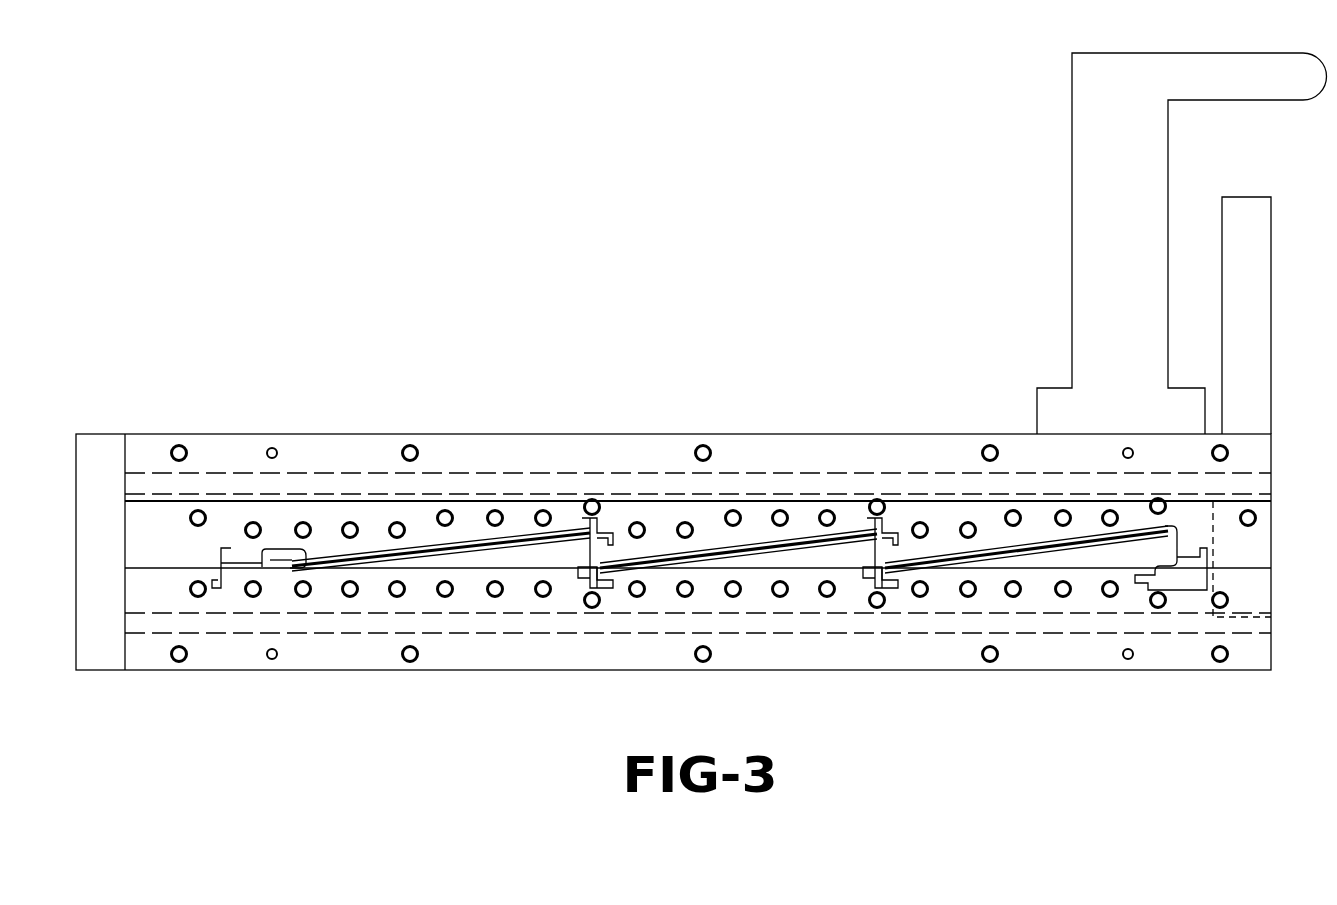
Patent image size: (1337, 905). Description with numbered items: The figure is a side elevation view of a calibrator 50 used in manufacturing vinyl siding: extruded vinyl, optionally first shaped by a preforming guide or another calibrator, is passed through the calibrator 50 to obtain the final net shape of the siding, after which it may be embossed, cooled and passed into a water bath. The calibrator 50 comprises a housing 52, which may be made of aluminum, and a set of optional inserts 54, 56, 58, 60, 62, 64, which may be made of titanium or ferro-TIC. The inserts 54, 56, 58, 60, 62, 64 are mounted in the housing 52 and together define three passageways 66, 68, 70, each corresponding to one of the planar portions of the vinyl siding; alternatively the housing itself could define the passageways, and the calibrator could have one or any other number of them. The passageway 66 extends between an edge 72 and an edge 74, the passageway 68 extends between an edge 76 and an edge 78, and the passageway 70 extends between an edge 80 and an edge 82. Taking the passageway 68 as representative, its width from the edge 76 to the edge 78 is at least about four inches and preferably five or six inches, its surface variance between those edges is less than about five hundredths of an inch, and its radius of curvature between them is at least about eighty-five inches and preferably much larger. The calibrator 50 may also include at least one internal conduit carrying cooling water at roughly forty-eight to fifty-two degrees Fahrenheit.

The calibrator 50 is at (253, 193).
The housing 52 is at (200, 434).
The insert 54 is at (372, 556).
The insert 56 is at (433, 560).
The insert 58 is at (688, 552).
The insert 60 is at (716, 562).
The insert 62 is at (989, 556).
The insert 64 is at (1078, 552).
The passageway 66 is at (476, 545).
The passageway 68 is at (762, 548).
The passageway 70 is at (994, 565).
The edge 72 is at (302, 568).
The edge 74 is at (600, 527).
The edge 76 is at (597, 572).
The edge 78 is at (881, 532).
The edge 80 is at (880, 571).
The edge 82 is at (1182, 530).